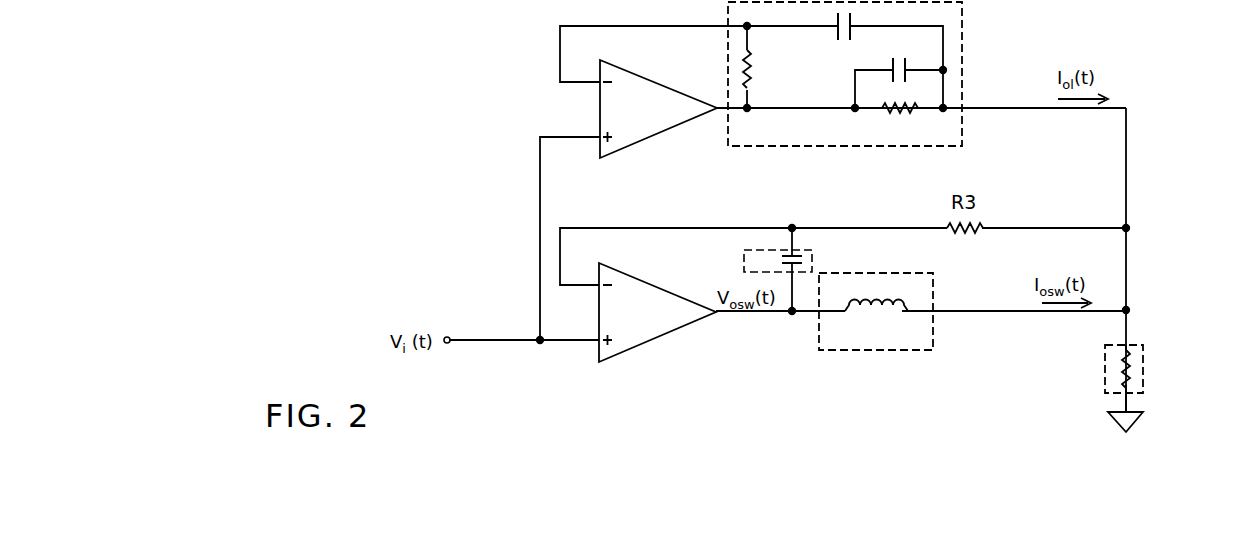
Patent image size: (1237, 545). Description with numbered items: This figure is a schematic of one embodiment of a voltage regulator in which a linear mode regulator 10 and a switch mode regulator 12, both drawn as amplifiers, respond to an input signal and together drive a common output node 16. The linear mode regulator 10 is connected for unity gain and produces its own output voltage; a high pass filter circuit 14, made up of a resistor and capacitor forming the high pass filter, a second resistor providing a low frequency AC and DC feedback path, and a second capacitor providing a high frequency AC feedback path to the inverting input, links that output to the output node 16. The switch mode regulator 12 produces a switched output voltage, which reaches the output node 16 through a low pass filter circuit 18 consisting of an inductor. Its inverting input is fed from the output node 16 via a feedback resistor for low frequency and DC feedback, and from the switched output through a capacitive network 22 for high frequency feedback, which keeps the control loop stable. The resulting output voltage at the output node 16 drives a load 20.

The linear mode regulator 10 is at (657, 135).
The switch mode regulator 12 is at (657, 337).
The high pass filter circuit 14 is at (963, 45).
The output node 16 is at (1126, 185).
The low pass filter circuit 18 is at (868, 350).
The load 20 is at (1103, 369).
The capacitive network 22 is at (742, 258).